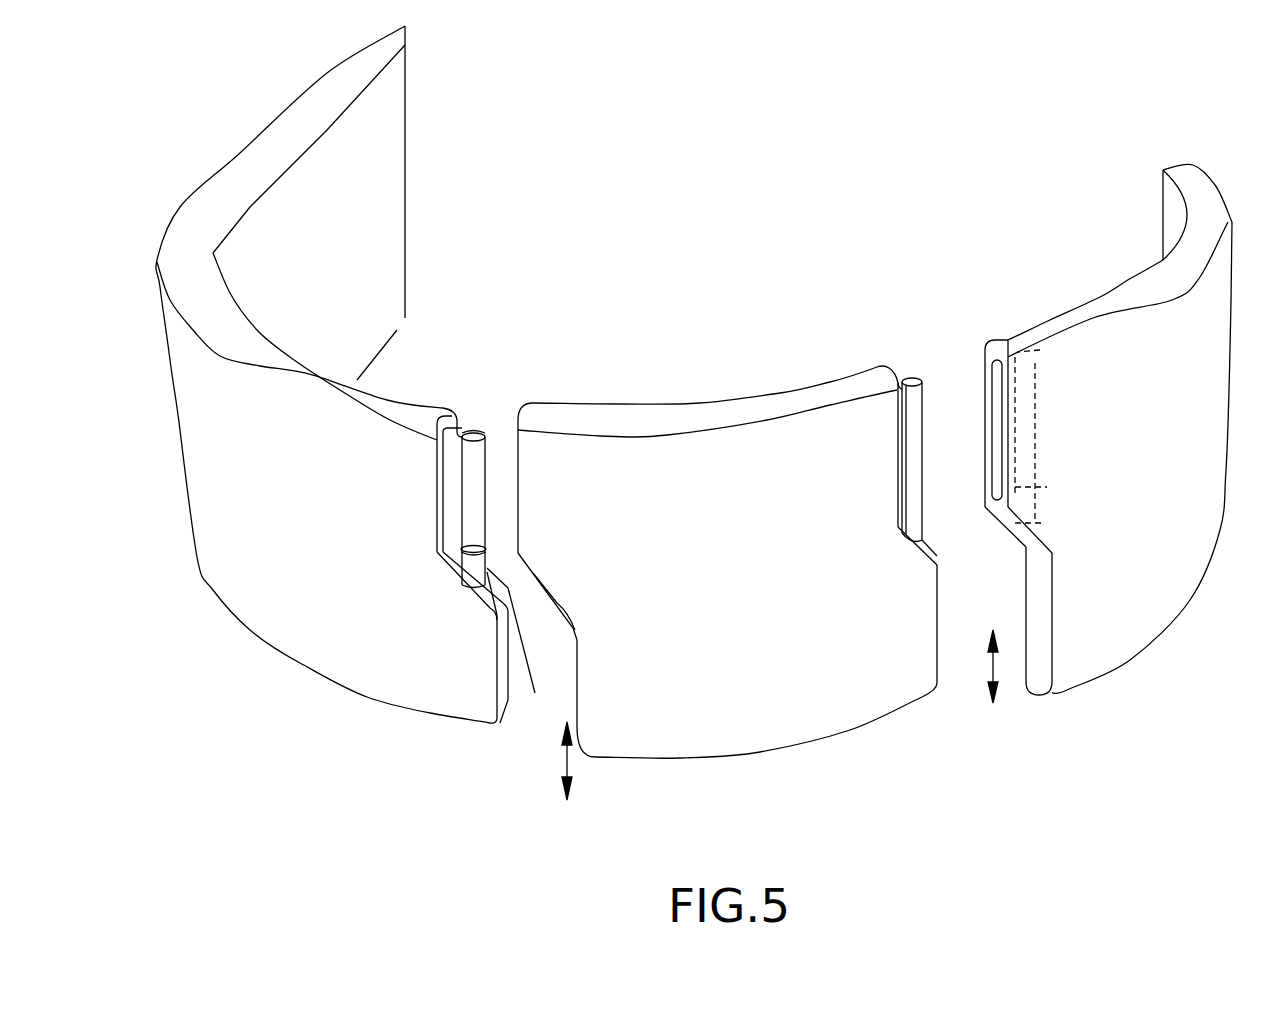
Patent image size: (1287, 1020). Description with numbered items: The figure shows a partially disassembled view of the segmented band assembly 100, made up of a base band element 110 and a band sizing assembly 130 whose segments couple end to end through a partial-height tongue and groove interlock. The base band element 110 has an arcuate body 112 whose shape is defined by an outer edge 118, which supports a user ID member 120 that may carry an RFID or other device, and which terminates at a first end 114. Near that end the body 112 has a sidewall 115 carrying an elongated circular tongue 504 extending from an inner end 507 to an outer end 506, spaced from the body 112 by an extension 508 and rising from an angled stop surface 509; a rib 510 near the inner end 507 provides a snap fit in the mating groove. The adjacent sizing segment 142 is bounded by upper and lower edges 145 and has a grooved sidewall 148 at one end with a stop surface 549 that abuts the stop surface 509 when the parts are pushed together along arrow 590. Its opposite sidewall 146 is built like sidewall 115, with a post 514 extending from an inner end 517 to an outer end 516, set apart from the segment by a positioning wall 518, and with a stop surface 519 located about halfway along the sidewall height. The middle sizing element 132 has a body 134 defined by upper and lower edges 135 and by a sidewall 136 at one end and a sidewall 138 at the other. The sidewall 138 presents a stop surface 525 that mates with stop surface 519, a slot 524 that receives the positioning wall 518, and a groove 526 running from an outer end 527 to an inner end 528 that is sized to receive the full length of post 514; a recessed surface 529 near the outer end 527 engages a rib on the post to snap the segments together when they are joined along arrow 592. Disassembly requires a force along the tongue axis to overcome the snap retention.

The band assembly 100 is at (754, 190).
The base band element 110 is at (224, 670).
The body 112 is at (215, 555).
The first end 114 is at (407, 687).
The sidewall 115 is at (507, 697).
The outer edge 118 is at (383, 402).
The user ID member 120 is at (201, 123).
The band sizing assembly 130 is at (582, 820).
The middle sizing element 132 is at (1069, 272).
The body 134 is at (1175, 450).
The upper and lower edges 135 is at (1200, 185).
The sidewall 136 is at (1160, 185).
The sidewall 138 is at (1037, 665).
The sizing segment 142 is at (725, 366).
The upper and lower edges 145 is at (638, 420).
The sidewall 146 is at (940, 667).
The sidewall 148 is at (580, 747).
The tongue 504 is at (487, 477).
The outer end 506 is at (478, 430).
The inner end 507 is at (505, 598).
The extension 508 is at (462, 430).
The stop surface 509 is at (505, 695).
The rib 510 is at (490, 548).
The post 514 is at (920, 455).
The outer end 516 is at (913, 380).
The inner end 517 is at (923, 540).
The positioning wall 518 is at (898, 383).
The stop surface 519 is at (938, 560).
The slot 524 is at (993, 425).
The stop surface 525 is at (1030, 537).
The groove 526 is at (1035, 397).
The outer end 527 is at (1045, 524).
The inner end 528 is at (1040, 350).
The recessed surface 529 is at (1047, 485).
The stop surface 549 is at (575, 630).
The arrow 590 is at (563, 768).
The arrow 592 is at (995, 667).